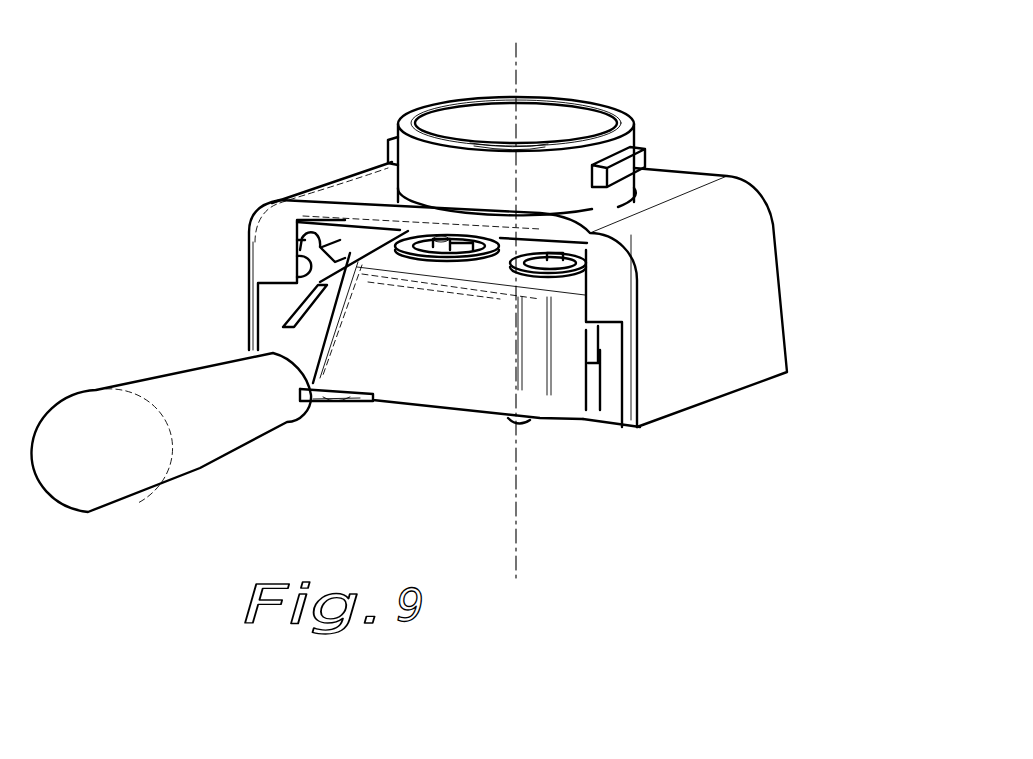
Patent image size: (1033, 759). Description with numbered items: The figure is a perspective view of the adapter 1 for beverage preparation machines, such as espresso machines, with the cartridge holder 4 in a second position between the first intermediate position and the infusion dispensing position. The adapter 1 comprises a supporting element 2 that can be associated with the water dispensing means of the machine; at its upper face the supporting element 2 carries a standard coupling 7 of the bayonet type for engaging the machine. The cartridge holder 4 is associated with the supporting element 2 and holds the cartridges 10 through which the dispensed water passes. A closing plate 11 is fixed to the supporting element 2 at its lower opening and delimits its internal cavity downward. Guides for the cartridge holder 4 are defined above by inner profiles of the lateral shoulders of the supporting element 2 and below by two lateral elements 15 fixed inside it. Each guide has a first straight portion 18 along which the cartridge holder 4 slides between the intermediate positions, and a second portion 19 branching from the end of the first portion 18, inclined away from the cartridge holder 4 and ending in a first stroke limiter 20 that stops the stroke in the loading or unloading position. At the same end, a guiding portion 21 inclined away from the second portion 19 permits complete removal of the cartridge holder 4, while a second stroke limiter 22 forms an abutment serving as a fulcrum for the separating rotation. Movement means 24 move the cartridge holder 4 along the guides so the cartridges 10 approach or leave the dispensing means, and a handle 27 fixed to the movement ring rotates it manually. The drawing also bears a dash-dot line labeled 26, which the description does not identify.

The adapter 1 is at (160, 134).
The supporting element 2 is at (792, 234).
The cartridge holder 4 is at (440, 422).
The standard coupling 7 is at (652, 131).
The cartridge 10 is at (398, 228).
The closing plate 11 is at (608, 440).
The lateral element 15 is at (246, 334).
The first straight portion 18 is at (331, 237).
The second portion 19 is at (295, 245).
The first stroke limiter 20 is at (313, 233).
The guiding portion 21 is at (298, 308).
The second stroke limiter 22 is at (297, 273).
The movement means 24 is at (318, 436).
The axis 26 is at (514, 54).
The handle 27 is at (198, 418).